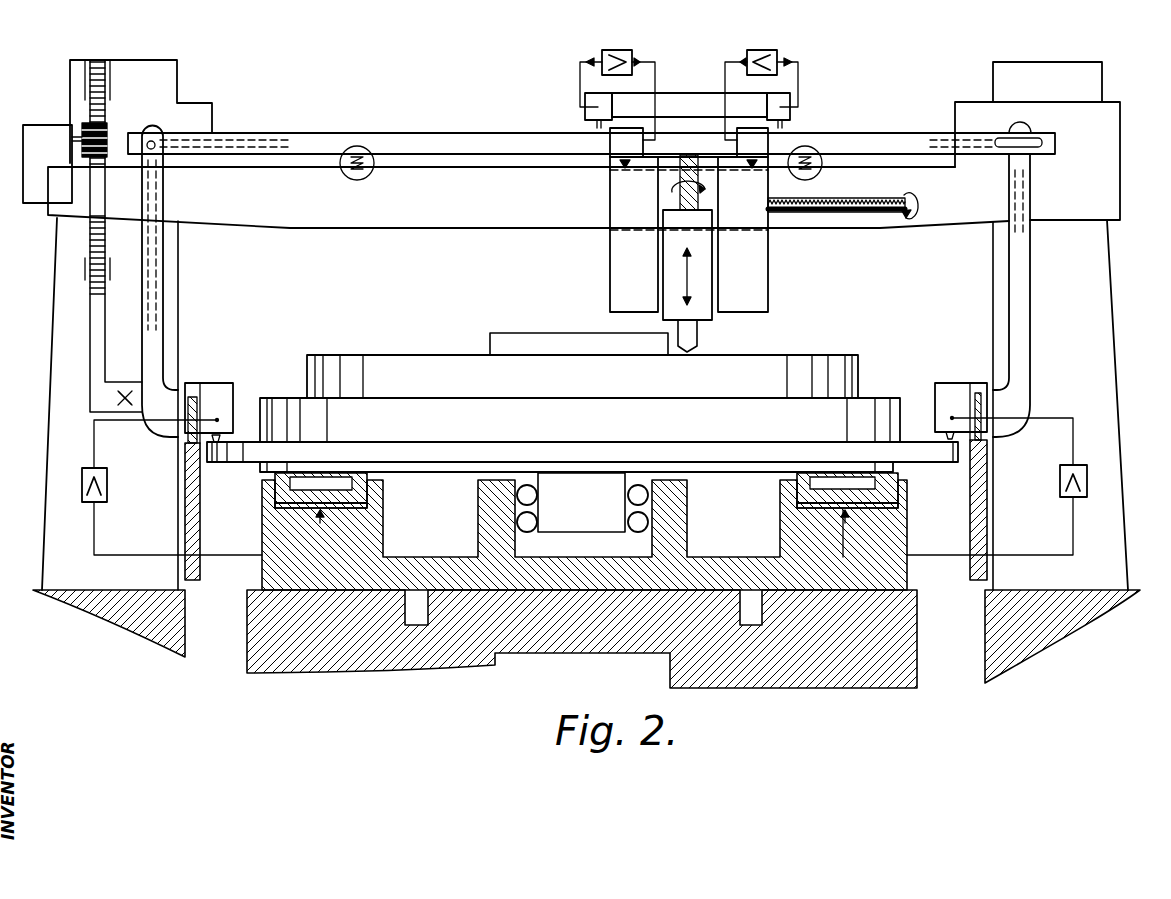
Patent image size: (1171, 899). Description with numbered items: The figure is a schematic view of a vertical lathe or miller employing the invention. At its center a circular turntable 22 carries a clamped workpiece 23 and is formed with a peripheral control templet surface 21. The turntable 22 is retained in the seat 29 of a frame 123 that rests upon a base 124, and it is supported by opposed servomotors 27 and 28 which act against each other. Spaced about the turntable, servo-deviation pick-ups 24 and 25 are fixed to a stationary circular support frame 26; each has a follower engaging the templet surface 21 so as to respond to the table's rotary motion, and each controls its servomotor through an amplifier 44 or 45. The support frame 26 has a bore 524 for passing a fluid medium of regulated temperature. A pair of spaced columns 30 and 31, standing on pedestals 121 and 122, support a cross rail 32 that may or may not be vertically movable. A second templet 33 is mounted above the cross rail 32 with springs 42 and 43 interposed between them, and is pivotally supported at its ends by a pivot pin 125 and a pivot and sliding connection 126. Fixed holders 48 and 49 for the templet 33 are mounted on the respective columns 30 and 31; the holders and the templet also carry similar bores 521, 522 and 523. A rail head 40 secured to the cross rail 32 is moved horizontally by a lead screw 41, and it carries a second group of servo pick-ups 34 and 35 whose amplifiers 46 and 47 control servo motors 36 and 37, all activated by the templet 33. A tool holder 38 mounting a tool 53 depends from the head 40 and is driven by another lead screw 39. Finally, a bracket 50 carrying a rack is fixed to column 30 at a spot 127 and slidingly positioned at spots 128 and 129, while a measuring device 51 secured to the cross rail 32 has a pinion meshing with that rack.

The peripheral control templet surface 21 is at (240, 467).
The circular turntable 22 is at (410, 407).
The workpiece 23 is at (492, 348).
The servo-deviation pick-up 24 is at (212, 393).
The servo-deviation pick-up 25 is at (942, 390).
The stationary circular support frame 26 is at (190, 507).
The servomotor 27 is at (360, 490).
The servomotor 28 is at (902, 487).
The seat 29 is at (487, 503).
The column 30 is at (45, 538).
The column 31 is at (997, 82).
The cross rail 32 is at (339, 224).
The second templet 33 is at (270, 140).
The servo pick-up 34 is at (598, 107).
The servo pick-up 35 is at (783, 105).
The servo motor 36 is at (617, 140).
The servo motor 37 is at (760, 143).
The tool holder 38 is at (703, 302).
The lead screw 39 is at (680, 175).
The rail head 40 is at (620, 249).
The lead screw 41 is at (853, 213).
The spring 42 is at (354, 157).
The spring 43 is at (813, 150).
The amplifier 44 is at (107, 483).
The amplifier 45 is at (1060, 473).
The amplifier 46 is at (590, 62).
The amplifier 47 is at (779, 53).
The fixed holder 48 is at (157, 300).
The fixed holder 49 is at (1015, 273).
The bracket 50 is at (95, 405).
The measuring device 51 is at (48, 135).
The tool 53 is at (697, 337).
The pedestal 121 is at (147, 600).
The pedestal 122 is at (1032, 597).
The frame 123 is at (370, 560).
The base 124 is at (250, 592).
The pivot pin 125 is at (154, 141).
The pivot and sliding connection 126 is at (1018, 139).
The spot 127 is at (117, 392).
The spot 128 is at (83, 73).
The spot 129 is at (87, 268).
The bore 521 is at (153, 237).
The bore 522 is at (1017, 227).
The bore 523 is at (218, 142).
The bore 524 is at (190, 445).